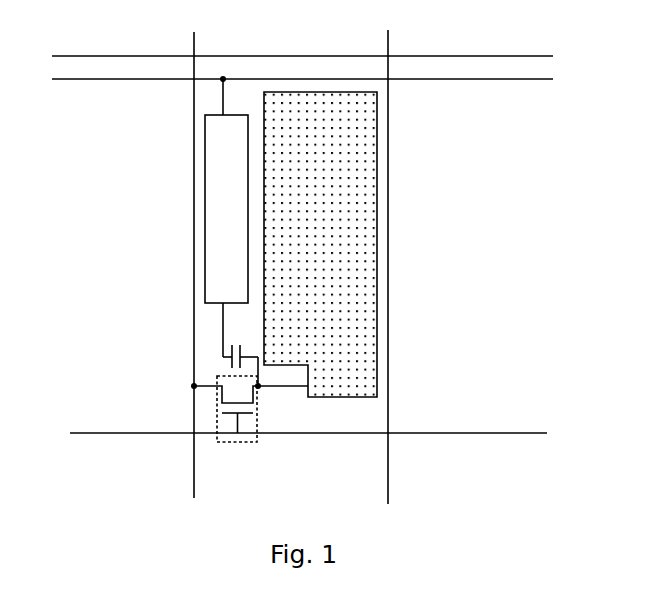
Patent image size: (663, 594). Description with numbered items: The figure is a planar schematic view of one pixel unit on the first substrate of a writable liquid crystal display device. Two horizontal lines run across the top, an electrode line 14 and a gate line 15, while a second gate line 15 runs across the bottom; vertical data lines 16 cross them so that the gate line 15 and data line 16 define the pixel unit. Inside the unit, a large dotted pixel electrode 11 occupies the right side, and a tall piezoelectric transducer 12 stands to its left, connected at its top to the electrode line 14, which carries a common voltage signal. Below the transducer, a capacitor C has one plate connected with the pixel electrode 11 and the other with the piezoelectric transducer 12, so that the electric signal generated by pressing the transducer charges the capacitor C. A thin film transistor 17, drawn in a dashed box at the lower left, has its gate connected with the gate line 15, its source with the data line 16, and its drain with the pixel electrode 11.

The pixel electrode 11 is at (358, 110).
The piezoelectric transducer 12 is at (219, 214).
The electrode line 14 is at (266, 79).
The gate line 15 is at (300, 56).
The data line 16 is at (194, 142).
The thin film transistor 17 is at (216, 425).
The capacitor C is at (242, 353).